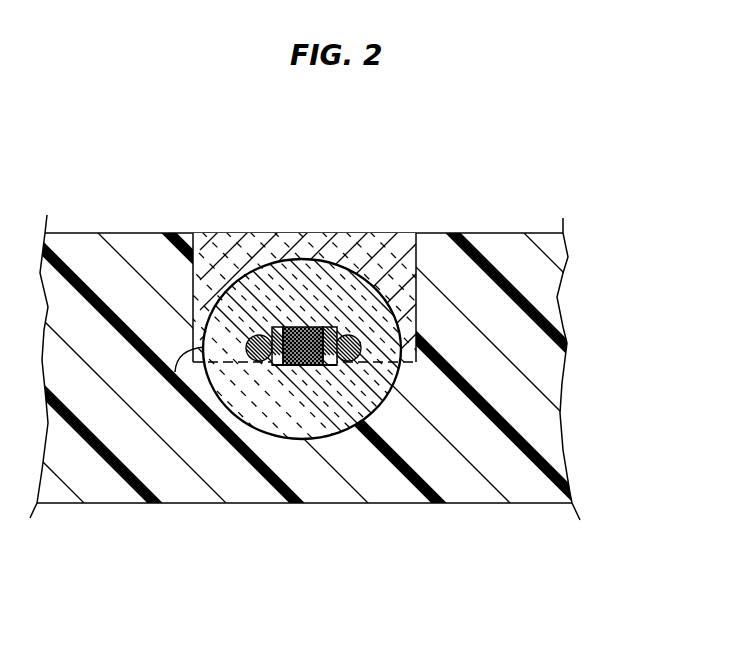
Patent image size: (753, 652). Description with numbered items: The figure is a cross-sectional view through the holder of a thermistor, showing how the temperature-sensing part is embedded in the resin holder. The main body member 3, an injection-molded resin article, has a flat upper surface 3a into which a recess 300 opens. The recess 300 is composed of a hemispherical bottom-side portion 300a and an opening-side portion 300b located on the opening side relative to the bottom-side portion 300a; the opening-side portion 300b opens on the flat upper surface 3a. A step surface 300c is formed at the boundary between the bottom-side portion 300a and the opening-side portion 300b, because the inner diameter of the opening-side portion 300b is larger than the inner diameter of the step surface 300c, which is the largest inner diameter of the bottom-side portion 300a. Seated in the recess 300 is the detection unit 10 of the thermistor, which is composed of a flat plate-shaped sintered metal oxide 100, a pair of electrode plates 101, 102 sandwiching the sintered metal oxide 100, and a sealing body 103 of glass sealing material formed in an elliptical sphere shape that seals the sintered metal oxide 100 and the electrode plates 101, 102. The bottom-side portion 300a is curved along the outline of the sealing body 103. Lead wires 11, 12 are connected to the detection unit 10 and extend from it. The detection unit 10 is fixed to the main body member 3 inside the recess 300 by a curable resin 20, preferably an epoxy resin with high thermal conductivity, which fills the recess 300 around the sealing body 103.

The main body member 3 is at (147, 240).
The upper surface of the main body member 3a is at (88, 232).
The curable resin 20 is at (348, 250).
The recess 300 is at (350, 386).
The bottom-side portion 300a is at (396, 376).
The opening-side portion 300b is at (413, 310).
The step surface 300c is at (178, 378).
The detection unit 10 is at (327, 387).
The lead wire 11 is at (250, 335).
The lead wire 12 is at (350, 333).
The sintered metal oxide 100 is at (314, 366).
The electrode plate 101 is at (280, 364).
The electrode plate 102 is at (333, 366).
The sealing body 103 is at (344, 366).